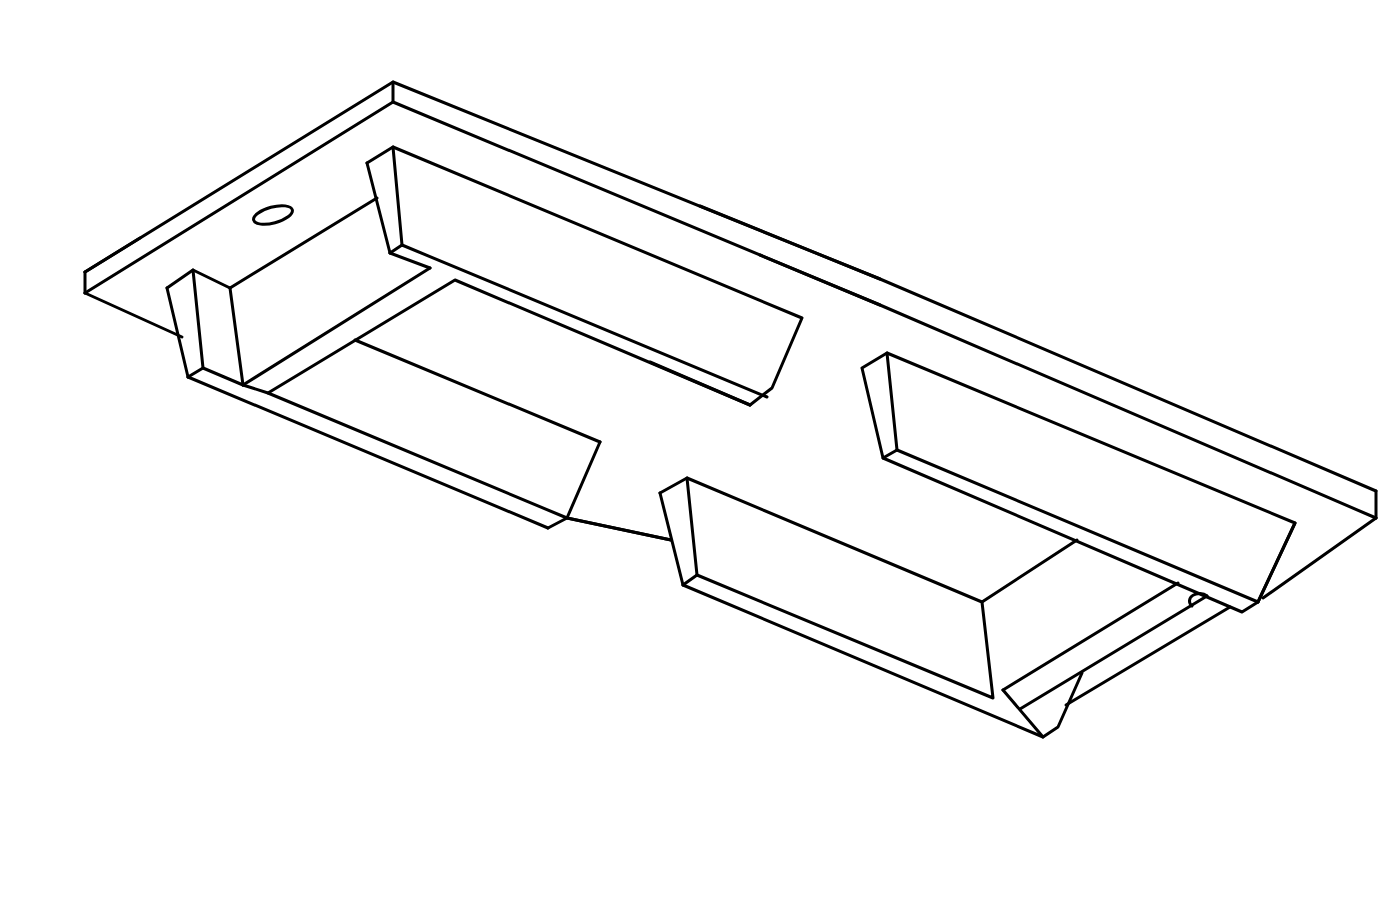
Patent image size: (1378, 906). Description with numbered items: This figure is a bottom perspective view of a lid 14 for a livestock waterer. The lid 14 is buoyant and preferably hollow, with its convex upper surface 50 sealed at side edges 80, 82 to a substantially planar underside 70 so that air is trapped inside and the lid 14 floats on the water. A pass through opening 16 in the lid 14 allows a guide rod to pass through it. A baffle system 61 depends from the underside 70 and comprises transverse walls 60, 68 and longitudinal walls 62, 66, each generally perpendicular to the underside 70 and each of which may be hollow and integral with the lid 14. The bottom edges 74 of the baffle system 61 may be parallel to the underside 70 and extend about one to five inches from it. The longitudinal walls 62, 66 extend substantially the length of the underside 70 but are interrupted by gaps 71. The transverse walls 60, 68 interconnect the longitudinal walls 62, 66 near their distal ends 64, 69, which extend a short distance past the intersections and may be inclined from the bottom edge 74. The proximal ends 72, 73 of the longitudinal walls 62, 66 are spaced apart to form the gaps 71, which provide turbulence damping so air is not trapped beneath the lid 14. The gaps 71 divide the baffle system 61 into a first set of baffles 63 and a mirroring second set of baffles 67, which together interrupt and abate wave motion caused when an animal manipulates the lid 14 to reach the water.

The lid 14 is at (1068, 308).
The pass through opening 16 is at (268, 212).
The upper surface 50 is at (1253, 442).
The transverse wall 60 is at (350, 250).
The baffle system 61 is at (182, 355).
The longitudinal wall 62 is at (653, 288).
The first set of baffles 63 is at (426, 284).
The distal end 64 is at (385, 175).
The longitudinal wall 66 is at (365, 390).
The second set of baffles 67 is at (1010, 703).
The transverse wall 68 is at (1083, 607).
The distal end 69 is at (420, 186).
The underside 70 is at (810, 300).
The gap 71 is at (822, 383).
The proximal end 72 is at (684, 552).
The proximal end 73 is at (598, 462).
The bottom edge 74 is at (467, 485).
The side edge 80 is at (122, 256).
The side edge 82 is at (768, 252).